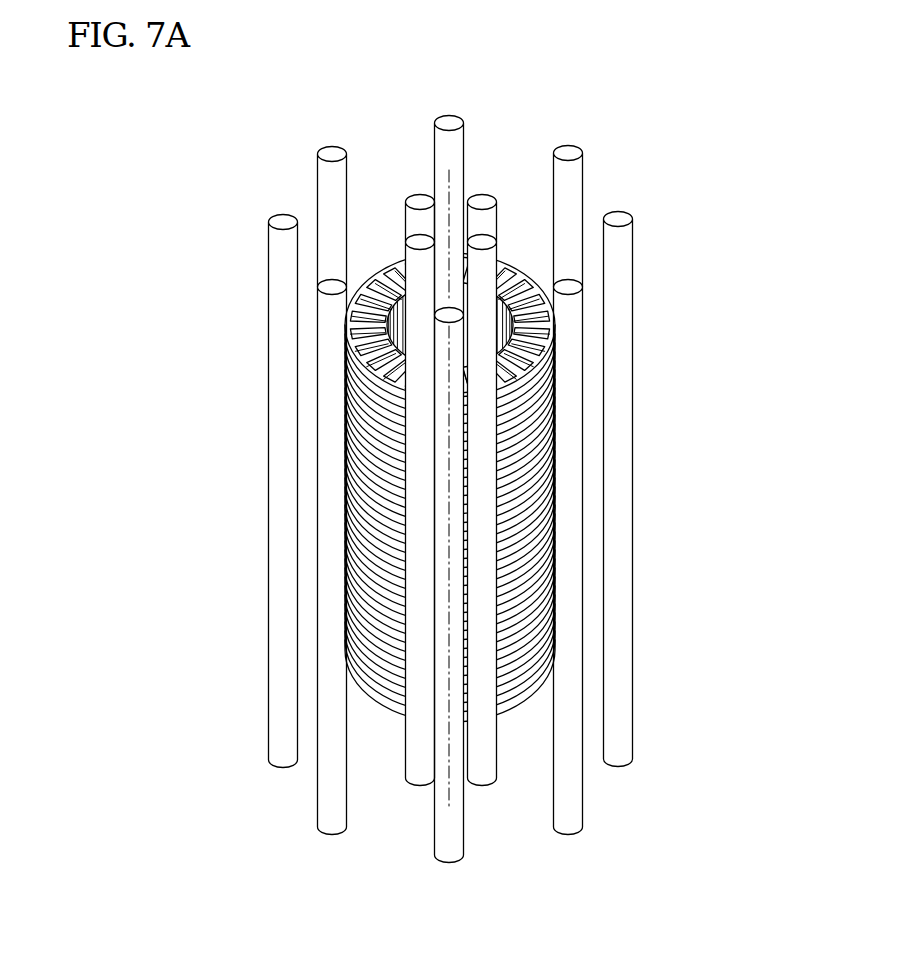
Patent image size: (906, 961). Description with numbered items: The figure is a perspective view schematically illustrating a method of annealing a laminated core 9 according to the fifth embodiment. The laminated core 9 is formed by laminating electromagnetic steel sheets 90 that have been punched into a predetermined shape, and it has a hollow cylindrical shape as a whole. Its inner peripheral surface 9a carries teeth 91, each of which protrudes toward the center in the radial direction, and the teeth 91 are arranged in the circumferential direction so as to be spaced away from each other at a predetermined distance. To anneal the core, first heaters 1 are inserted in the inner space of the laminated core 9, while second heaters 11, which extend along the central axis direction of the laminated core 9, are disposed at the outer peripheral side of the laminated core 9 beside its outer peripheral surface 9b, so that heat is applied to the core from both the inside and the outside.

The first heater 1 is at (417, 198).
The laminated core 9 is at (457, 495).
The inner peripheral surface of laminated core 9a is at (518, 287).
The outer peripheral surface of laminated core 9b is at (367, 265).
The second heater 11 is at (322, 168).
The punched electromagnetic steel sheet 90 is at (530, 406).
The tooth formed on inner peripheral surface of laminated core 91 is at (383, 365).